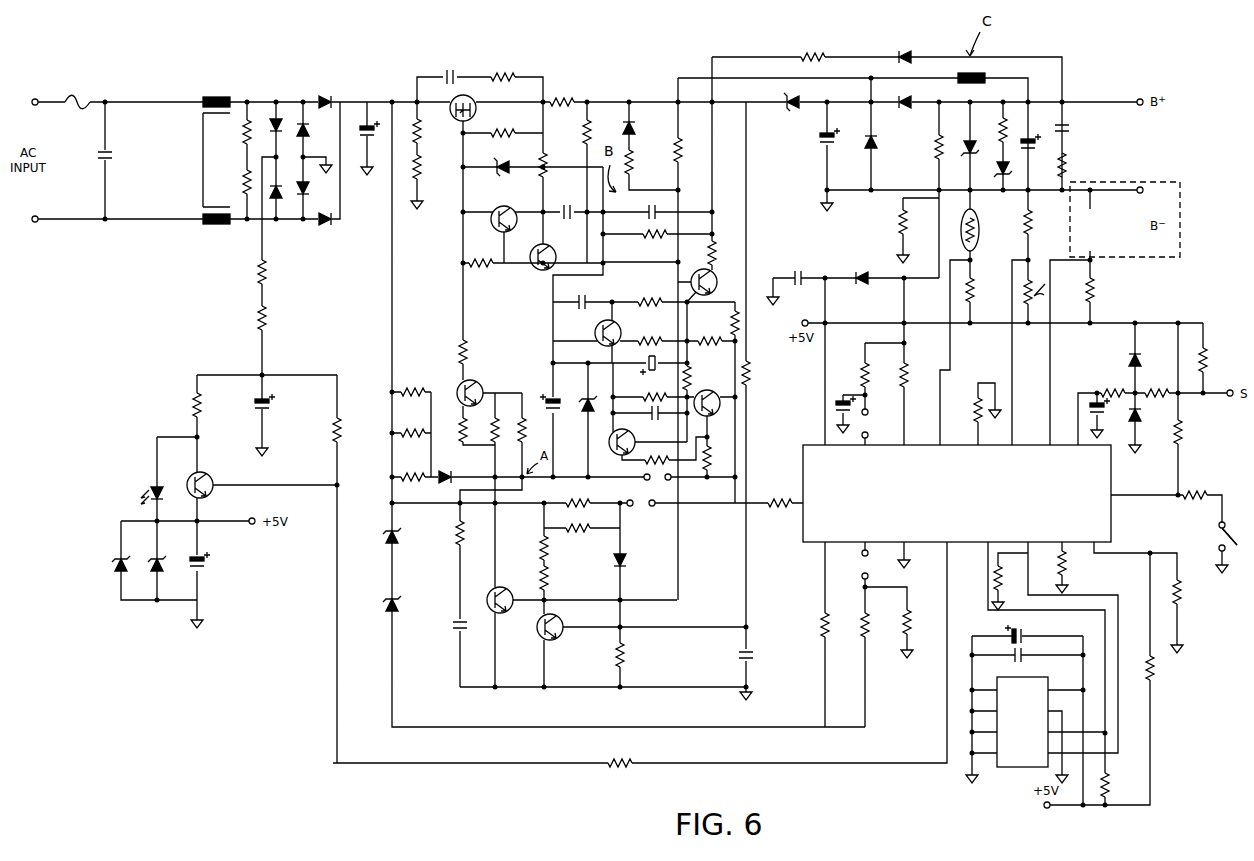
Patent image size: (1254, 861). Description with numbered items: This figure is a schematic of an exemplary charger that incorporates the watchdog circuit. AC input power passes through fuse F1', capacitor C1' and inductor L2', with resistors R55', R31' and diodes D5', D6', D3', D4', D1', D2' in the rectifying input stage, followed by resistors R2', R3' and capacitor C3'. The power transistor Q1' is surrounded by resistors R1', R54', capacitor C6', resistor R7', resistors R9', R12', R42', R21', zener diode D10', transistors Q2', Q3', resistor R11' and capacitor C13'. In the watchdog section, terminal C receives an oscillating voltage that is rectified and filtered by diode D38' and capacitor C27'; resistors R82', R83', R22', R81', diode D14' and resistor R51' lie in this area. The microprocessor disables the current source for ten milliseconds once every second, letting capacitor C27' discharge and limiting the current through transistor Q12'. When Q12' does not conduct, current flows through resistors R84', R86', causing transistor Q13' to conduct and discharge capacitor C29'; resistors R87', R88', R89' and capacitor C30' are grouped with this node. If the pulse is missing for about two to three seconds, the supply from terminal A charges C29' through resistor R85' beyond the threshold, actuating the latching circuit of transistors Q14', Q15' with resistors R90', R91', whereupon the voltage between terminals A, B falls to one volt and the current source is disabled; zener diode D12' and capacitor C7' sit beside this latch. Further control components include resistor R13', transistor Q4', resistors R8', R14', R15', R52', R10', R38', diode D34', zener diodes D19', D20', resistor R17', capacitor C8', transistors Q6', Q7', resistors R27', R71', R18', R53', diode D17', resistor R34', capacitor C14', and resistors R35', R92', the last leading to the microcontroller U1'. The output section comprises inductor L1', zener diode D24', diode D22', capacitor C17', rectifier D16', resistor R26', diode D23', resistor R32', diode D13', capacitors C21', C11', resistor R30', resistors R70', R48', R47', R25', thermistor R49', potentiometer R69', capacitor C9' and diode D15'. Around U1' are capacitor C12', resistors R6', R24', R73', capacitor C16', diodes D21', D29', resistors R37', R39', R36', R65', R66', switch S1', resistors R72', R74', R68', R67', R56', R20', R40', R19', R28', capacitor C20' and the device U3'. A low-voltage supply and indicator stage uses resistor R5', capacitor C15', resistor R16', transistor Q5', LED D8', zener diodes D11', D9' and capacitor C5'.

The fuse F1' is at (77, 93).
The capacitor C1' is at (96, 156).
The inductor L2' is at (216, 151).
The resistor R55' is at (233, 132).
The resistor R31' is at (233, 182).
The diode D5' is at (285, 132).
The diode D6' is at (285, 199).
The diode D3' is at (313, 127).
The diode D4' is at (313, 188).
The diode D1' is at (323, 93).
The diode D2' is at (328, 229).
The resistor R2' is at (273, 272).
The resistor R3' is at (273, 318).
The capacitor C3' is at (361, 142).
The resistor R1' is at (428, 131).
The resistor R54' is at (432, 167).
The capacitor C6' is at (450, 68).
The resistor R7' is at (503, 67).
The transistor Q1' is at (474, 104).
The resistor R9' is at (503, 123).
The zener diode D10' is at (511, 160).
The resistor R12' is at (558, 165).
The resistor R42' is at (573, 132).
The resistor R21' is at (563, 92).
The transistor Q2' is at (504, 209).
The transistor Q3' is at (555, 257).
The resistor R11' is at (483, 253).
The capacitor C13' is at (569, 221).
The capacitor C27' is at (651, 205).
The resistor R82' is at (646, 227).
The diode D14' is at (644, 128).
The resistor R51' is at (644, 162).
The resistor R22' is at (692, 151).
The resistor R83' is at (699, 253).
The transistor Q12' is at (717, 285).
The resistor R86' is at (651, 293).
The transistor Q13' is at (622, 327).
The resistor R87' is at (658, 332).
The resistor R84' is at (721, 323).
The resistor R85' is at (714, 350).
The resistor R88' is at (701, 378).
The resistor R89' is at (656, 389).
The capacitor C29' is at (638, 360).
The zener diode D12' is at (581, 396).
The capacitor C7' is at (559, 415).
The capacitor C30' is at (655, 420).
The transistor Q15' is at (613, 449).
The transistor Q14' is at (717, 410).
The resistor R90' is at (721, 459).
The resistor R91' is at (679, 476).
The resistor R13' is at (478, 352).
The transistor Q4' is at (480, 388).
The resistor R8' is at (472, 430).
The resistor R14' is at (506, 423).
The resistor R15' is at (537, 430).
The resistor R52' is at (413, 384).
The resistor R10' is at (413, 425).
The resistor R38' is at (413, 469).
The diode D34' is at (448, 469).
The zener diode D19' is at (405, 539).
The zener diode D20' is at (405, 607).
The resistor R17' is at (475, 533).
The capacitor C8' is at (470, 626).
The transistor Q6' is at (511, 596).
The transistor Q7' is at (561, 624).
The resistor R27' is at (559, 548).
The resistor R71' is at (559, 578).
The resistor R18' is at (591, 496).
The resistor R53' is at (592, 521).
The diode D17' is at (636, 561).
The resistor R34' is at (605, 655).
The capacitor C14' is at (761, 656).
The resistor R35' is at (761, 373).
The resistor R92' is at (779, 495).
The resistor R81' is at (815, 48).
The diode D38' is at (909, 49).
The inductor L1' is at (981, 86).
The zener diode D24' is at (781, 96).
The diode D22' is at (892, 94).
The capacitor C17' is at (838, 144).
The diode D16' is at (886, 143).
The resistor R26' is at (926, 152).
The transient suppressor diode D23' is at (963, 136).
The resistor R32' is at (992, 127).
The zener diode D13' is at (993, 173).
The capacitor C21' is at (1040, 153).
The resistor R30' is at (1077, 165).
The capacitor C11' is at (1077, 128).
The resistor R70' is at (1043, 222).
The NTC thermistor R49' is at (986, 230).
The resistor R48' is at (986, 290).
The potentiometer R69' is at (1047, 297).
The resistor R47' is at (1106, 290).
The resistor R25' is at (919, 222).
The capacitor C9' is at (797, 269).
The diode D15' is at (862, 268).
The capacitor C12' is at (836, 395).
The resistor R6' is at (876, 375).
The resistor R24' is at (919, 375).
The resistor R73' is at (964, 410).
The capacitor C16' is at (1110, 416).
The diode D21' is at (1150, 353).
The resistor R37' is at (1113, 384).
The resistor R39' is at (1157, 384).
The diode D29' is at (1150, 420).
The resistor R36' is at (1219, 360).
The resistor R65' is at (1194, 432).
The resistor R66' is at (1196, 505).
The switch S1' is at (1217, 540).
The resistor R72' is at (1077, 563).
The resistor R74' is at (1013, 578).
The resistor R68' is at (1193, 592).
The resistor R67' is at (1166, 668).
The resistor R56' is at (1120, 785).
The resistor R20' is at (840, 625).
The resistor R40' is at (881, 625).
The resistor R19' is at (923, 622).
The resistor R28' is at (619, 772).
The capacitor C20' is at (1032, 660).
The microcontroller U1' is at (957, 493).
The integrated circuit U3' is at (1022, 722).
The resistor R5' is at (208, 405).
The capacitor C15' is at (275, 412).
The resistor R16' is at (352, 430).
The transistor Q5' is at (212, 481).
The light emitting diode D8' is at (165, 495).
The zener diode D11' is at (131, 571).
The zener diode D9' is at (165, 571).
The capacitor C5' is at (207, 570).